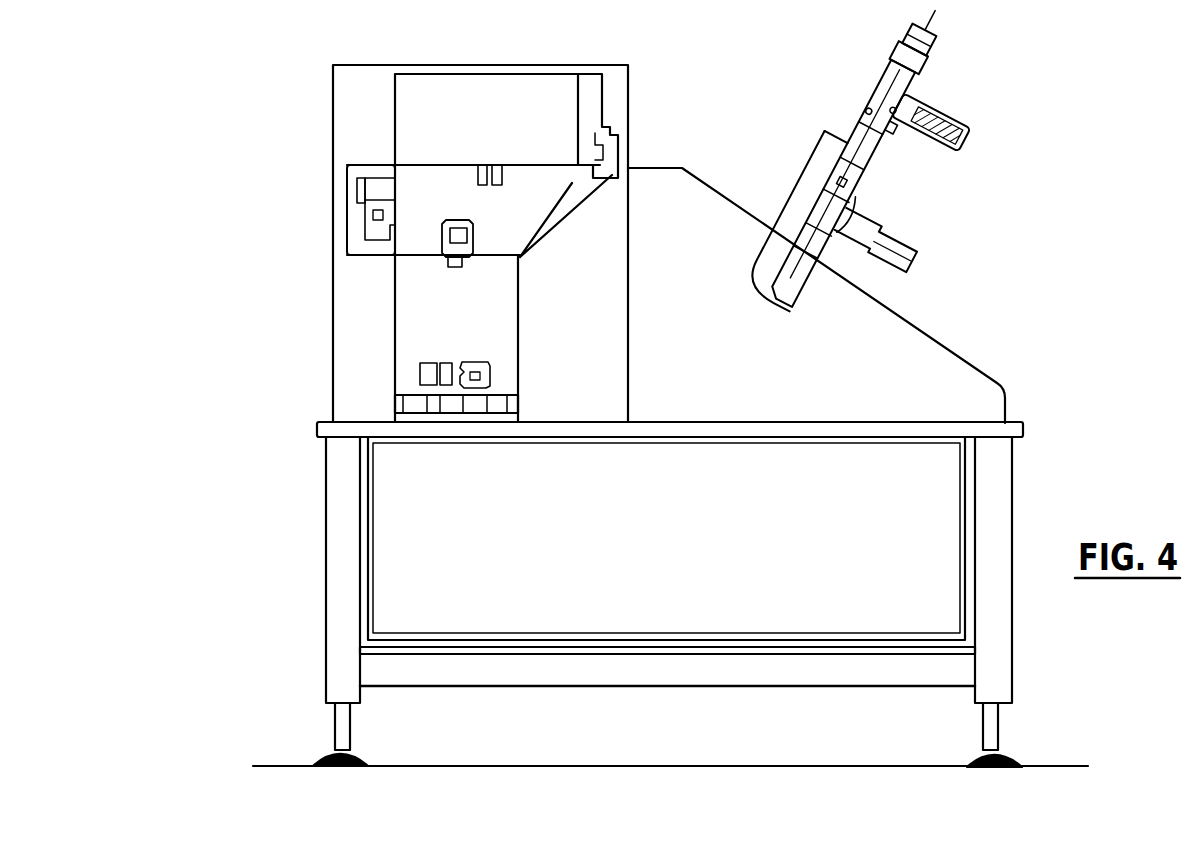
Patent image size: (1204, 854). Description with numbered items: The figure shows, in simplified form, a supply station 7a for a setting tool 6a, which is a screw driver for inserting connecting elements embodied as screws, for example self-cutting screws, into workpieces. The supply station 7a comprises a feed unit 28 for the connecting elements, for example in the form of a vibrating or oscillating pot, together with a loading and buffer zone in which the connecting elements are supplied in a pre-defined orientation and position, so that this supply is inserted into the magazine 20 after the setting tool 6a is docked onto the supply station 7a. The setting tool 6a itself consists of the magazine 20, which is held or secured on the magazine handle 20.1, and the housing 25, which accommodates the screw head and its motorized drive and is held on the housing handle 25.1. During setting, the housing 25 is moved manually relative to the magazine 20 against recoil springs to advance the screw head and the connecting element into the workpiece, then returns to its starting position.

The setting tool 6a is at (950, 97).
The supply station 7a is at (293, 226).
The magazine 20 is at (803, 197).
The handle on magazine 20.1 is at (892, 238).
The housing 25 is at (883, 90).
The housing handle 25.1 is at (967, 133).
The feed unit for connecting elements 28 is at (428, 98).